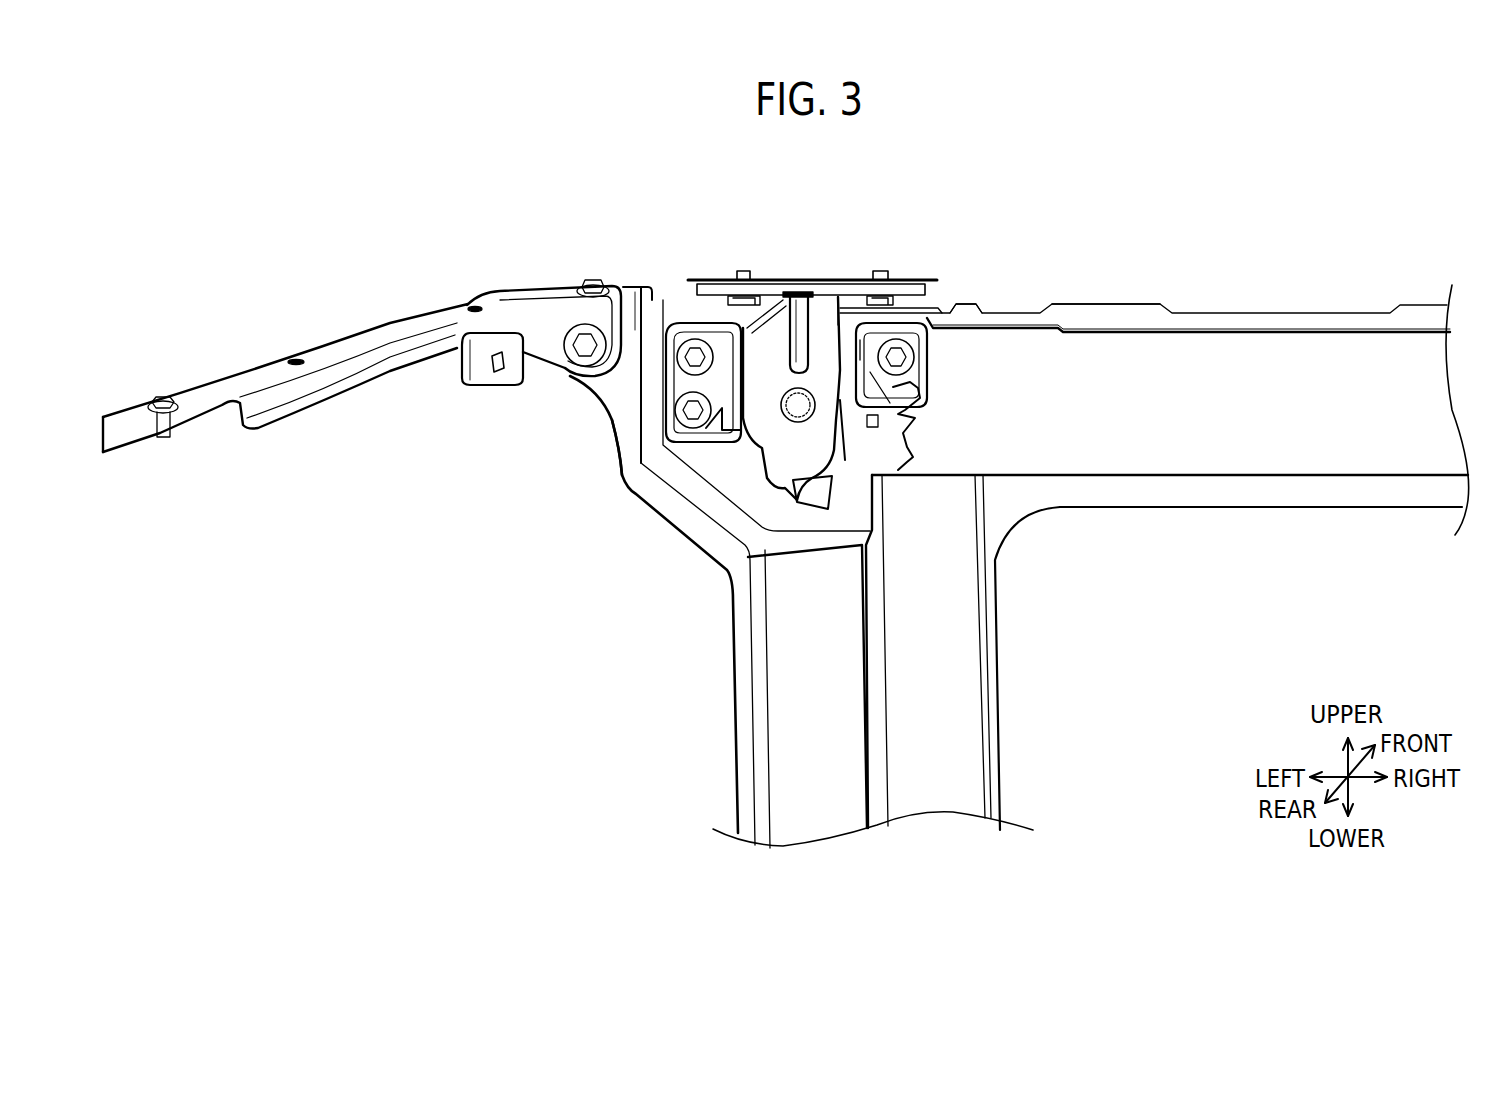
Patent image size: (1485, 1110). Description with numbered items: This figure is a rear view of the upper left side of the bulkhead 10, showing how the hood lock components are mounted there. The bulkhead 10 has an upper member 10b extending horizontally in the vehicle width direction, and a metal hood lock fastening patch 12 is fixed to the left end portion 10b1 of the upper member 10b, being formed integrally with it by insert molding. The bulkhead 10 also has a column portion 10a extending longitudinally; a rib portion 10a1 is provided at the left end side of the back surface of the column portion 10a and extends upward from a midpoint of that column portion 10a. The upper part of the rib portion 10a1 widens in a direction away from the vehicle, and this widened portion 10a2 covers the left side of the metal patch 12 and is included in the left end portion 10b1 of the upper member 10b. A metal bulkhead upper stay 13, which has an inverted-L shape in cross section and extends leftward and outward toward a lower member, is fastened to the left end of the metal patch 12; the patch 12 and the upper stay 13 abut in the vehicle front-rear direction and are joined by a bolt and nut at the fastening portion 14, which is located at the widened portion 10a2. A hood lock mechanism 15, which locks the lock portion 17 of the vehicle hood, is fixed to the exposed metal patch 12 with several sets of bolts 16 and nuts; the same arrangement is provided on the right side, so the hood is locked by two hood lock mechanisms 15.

The bulkhead 10 is at (1241, 375).
The column portion 10a is at (807, 623).
The rib portion 10a1 is at (628, 418).
The widened portion 10a2 is at (582, 393).
The upper member 10b is at (1033, 368).
The left end portion 10b1 is at (953, 367).
The metal hood lock fastening patch 12 is at (715, 327).
The bulkhead upper stay 13 is at (405, 328).
The fastening portion 14 is at (580, 337).
The hood lock mechanism 15 is at (775, 375).
The bolt 16 is at (693, 357).
The lock portion 17 is at (803, 342).